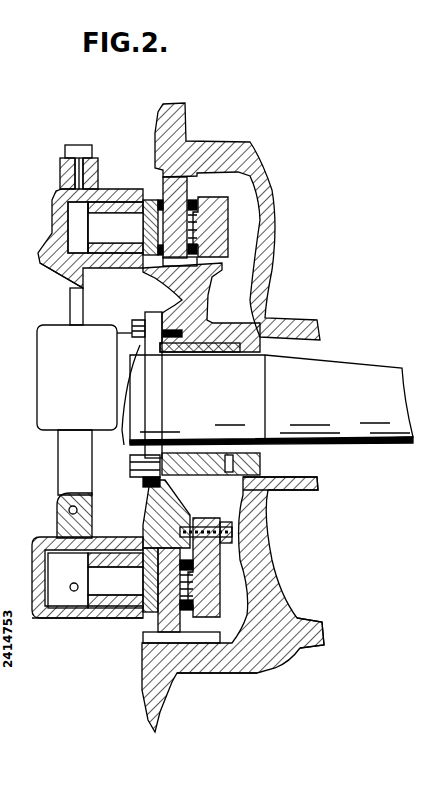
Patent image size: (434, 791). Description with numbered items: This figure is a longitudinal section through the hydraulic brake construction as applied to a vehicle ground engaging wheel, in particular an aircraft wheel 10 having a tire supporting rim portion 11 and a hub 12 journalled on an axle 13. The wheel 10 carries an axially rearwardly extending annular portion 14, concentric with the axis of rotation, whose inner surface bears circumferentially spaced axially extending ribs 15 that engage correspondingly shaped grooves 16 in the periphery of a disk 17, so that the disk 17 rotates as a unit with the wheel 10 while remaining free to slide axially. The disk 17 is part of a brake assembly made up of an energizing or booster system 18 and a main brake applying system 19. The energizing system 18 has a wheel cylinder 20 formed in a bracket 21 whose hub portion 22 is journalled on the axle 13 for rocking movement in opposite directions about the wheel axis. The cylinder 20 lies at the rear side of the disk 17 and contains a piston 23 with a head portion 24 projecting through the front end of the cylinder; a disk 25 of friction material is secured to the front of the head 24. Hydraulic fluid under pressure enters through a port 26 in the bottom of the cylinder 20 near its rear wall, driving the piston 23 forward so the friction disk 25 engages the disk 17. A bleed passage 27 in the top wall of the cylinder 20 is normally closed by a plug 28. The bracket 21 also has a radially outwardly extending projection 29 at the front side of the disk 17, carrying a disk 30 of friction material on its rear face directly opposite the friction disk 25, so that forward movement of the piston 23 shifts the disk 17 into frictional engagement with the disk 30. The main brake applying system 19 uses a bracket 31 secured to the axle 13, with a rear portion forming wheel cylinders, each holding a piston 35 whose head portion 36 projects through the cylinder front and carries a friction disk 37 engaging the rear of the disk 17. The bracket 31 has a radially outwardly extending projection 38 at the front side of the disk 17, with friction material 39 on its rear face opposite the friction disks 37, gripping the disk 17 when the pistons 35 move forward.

The aircraft ground engaging wheel 10 is at (245, 678).
The tire supporting rim portion 11 is at (314, 650).
The hub 12 is at (300, 492).
The axle 13 is at (350, 392).
The axially rearwardly extending annular portion 14 is at (225, 145).
The axially extending ribs 15 is at (207, 645).
The grooves 16 is at (142, 667).
The disk 17 is at (143, 622).
The energizing or booster system 18 is at (46, 208).
The main brake applying system 19 is at (61, 624).
The wheel cylinder 20 is at (118, 188).
The bracket 21 is at (167, 290).
The hub portion 22 is at (220, 322).
The piston 23 is at (100, 237).
The head portion 24 is at (143, 226).
The disk of friction material 25 is at (157, 205).
The port 26 is at (57, 263).
The bleed passage 27 is at (62, 196).
The plug 28 is at (78, 145).
The radially outwardly extending projection 29 is at (228, 237).
The disk of friction material 30 is at (216, 217).
The bracket 31 is at (143, 521).
The piston 35 is at (80, 620).
The head portion 36 is at (143, 583).
The friction disk 37 is at (157, 522).
The radially outwardly extending projection 38 is at (213, 562).
The friction material 39 is at (188, 582).